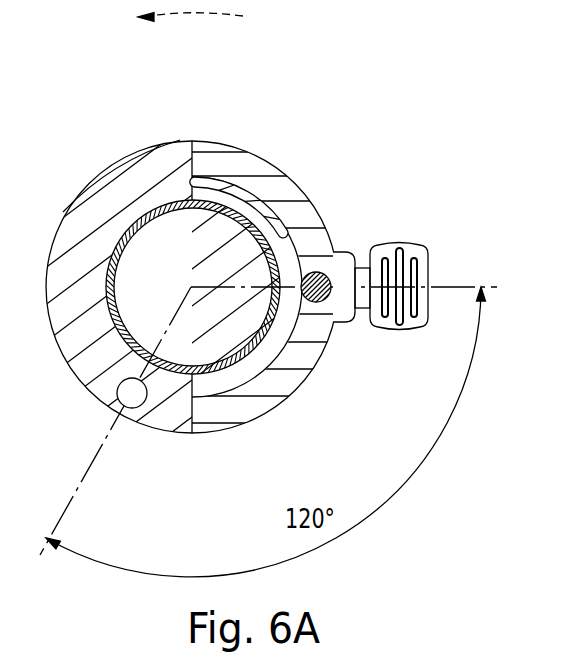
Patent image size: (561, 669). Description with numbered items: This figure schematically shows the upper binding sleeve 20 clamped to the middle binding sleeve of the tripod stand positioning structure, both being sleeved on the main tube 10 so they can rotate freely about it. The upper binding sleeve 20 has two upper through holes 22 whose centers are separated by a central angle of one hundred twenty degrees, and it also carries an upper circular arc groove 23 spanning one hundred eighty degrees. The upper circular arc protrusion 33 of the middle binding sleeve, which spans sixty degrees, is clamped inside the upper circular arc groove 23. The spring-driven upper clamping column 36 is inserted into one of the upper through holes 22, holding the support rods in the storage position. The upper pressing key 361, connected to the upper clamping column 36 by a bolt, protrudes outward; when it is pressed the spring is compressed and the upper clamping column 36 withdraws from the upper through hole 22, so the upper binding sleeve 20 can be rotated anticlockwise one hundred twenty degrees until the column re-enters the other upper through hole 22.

The main tube 10 is at (110, 323).
The upper binding sleeve 20 is at (219, 141).
The upper through holes 22 is at (322, 301).
The upper circular arc groove 23 is at (287, 248).
The upper circular arc protrusion 33 is at (263, 214).
The upper clamping column 36 is at (322, 277).
The upper pressing key 361 is at (413, 252).